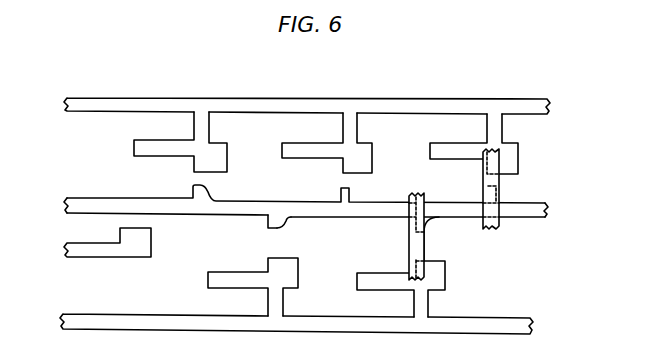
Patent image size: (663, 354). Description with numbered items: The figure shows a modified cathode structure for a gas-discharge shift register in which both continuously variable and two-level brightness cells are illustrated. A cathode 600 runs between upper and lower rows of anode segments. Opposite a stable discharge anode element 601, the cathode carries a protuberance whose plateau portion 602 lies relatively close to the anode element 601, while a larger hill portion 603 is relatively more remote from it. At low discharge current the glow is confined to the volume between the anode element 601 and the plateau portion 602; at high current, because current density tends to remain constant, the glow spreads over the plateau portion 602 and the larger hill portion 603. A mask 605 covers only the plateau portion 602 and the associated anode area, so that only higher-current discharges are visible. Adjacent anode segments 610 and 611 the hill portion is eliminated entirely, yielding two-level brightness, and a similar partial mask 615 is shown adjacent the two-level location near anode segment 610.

The cathode 600 is at (548, 205).
The stable discharge anode element 601 is at (292, 274).
The plateau portion of cathode protuberance 602 is at (272, 229).
The hill portion of cathode 603 is at (286, 222).
The mask 605 is at (417, 193).
The anode segment 610 is at (510, 163).
The anode segment 611 is at (344, 162).
The partial mask 615 is at (483, 187).